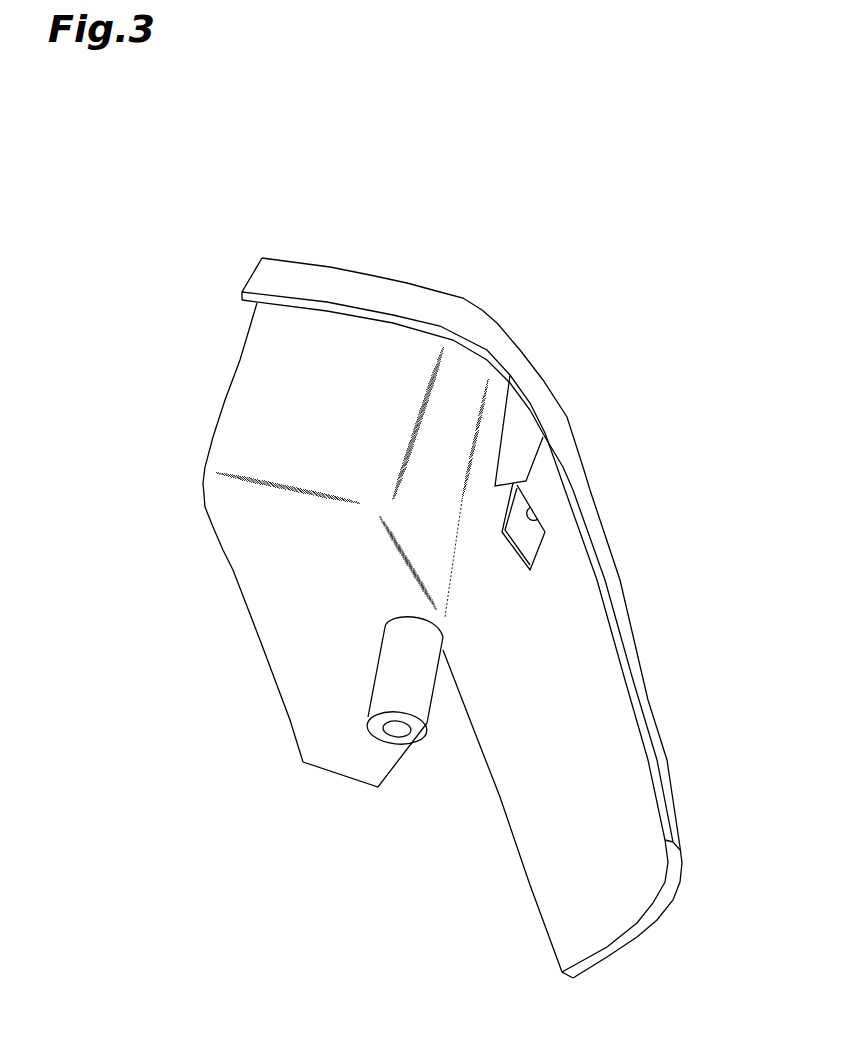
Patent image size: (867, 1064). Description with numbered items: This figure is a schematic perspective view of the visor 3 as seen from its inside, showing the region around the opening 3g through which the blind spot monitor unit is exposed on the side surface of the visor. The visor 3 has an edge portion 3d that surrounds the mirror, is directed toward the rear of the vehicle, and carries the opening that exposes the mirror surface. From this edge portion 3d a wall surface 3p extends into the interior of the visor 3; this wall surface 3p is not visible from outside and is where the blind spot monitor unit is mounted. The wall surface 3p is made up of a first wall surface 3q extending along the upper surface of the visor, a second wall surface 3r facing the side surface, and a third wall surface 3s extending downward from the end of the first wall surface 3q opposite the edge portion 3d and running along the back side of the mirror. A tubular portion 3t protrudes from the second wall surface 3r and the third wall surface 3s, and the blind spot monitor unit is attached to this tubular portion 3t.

The visor 3 is at (423, 253).
The edge portion 3d is at (437, 307).
The second wall surface 3r is at (443, 432).
The opening 3g is at (538, 519).
The first wall surface 3q is at (243, 407).
The wall surface 3p is at (320, 668).
The third wall surface 3s is at (332, 720).
The tubular portion 3t is at (382, 690).